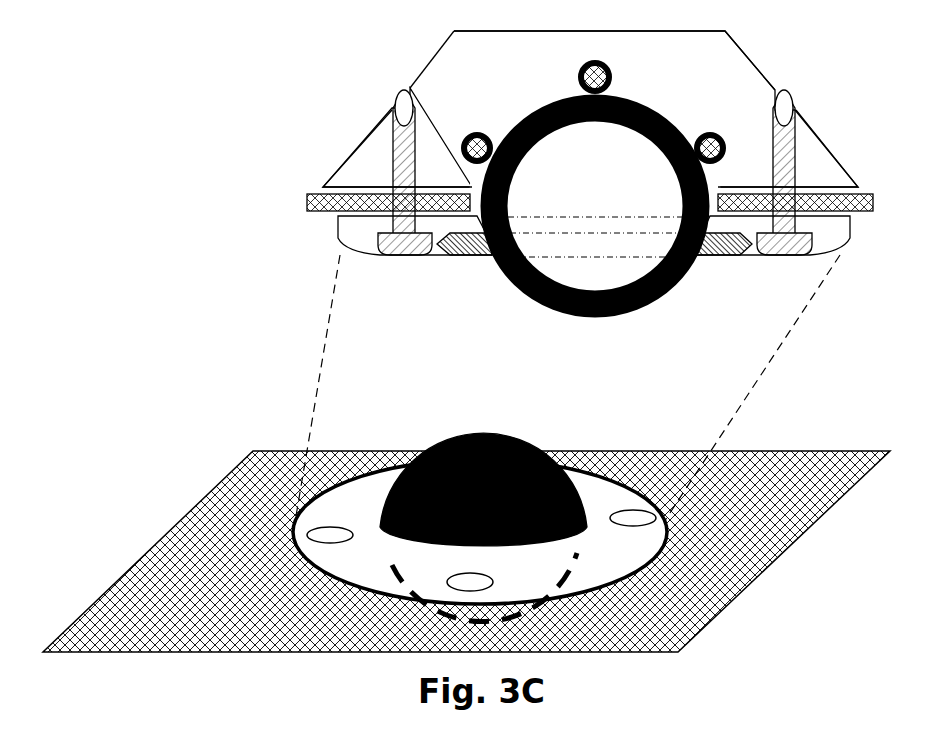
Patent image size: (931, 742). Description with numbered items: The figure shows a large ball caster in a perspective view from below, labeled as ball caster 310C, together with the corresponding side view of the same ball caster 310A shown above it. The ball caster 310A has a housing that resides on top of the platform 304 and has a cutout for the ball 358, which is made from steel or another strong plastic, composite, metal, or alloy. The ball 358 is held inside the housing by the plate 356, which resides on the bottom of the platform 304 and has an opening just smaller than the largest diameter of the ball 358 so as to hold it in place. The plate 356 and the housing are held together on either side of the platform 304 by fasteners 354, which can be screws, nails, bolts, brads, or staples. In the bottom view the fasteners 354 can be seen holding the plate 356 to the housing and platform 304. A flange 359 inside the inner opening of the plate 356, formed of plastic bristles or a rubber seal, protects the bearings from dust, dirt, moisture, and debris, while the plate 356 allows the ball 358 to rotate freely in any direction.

The ball caster 310A is at (355, 147).
The ball caster 310C is at (492, 485).
The platform 304 is at (225, 580).
The fasteners 354 is at (630, 515).
The plate 356 is at (348, 502).
The ball 358 is at (540, 440).
The flange 359 is at (582, 527).